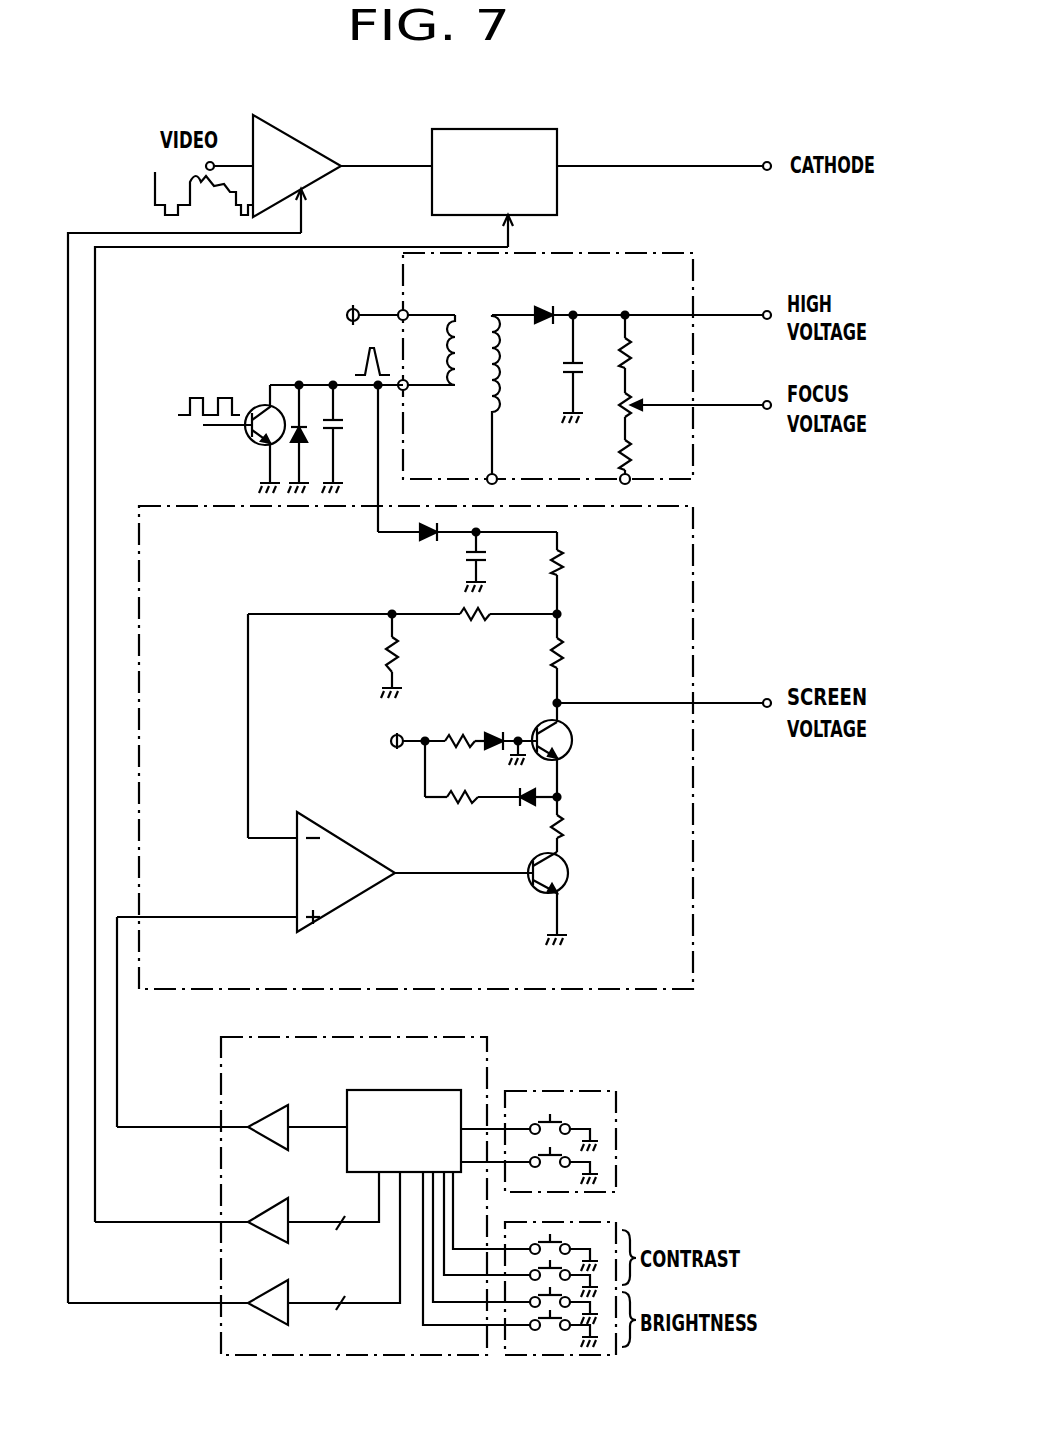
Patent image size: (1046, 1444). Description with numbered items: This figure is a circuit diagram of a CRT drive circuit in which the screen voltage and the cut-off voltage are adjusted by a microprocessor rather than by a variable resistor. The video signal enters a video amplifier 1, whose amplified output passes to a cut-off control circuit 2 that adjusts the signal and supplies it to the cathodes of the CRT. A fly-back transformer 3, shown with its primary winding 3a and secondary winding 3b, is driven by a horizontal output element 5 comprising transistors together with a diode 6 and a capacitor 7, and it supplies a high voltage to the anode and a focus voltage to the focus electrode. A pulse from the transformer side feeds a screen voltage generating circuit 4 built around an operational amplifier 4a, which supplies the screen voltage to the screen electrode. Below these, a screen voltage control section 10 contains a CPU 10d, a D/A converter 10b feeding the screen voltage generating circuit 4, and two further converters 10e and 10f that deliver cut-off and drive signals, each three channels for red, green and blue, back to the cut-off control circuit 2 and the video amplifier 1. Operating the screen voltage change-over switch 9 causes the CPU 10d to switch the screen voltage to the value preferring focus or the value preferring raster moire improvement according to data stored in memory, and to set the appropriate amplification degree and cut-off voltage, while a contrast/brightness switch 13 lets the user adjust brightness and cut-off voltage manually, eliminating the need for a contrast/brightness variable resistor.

The video amplifier 1 is at (300, 142).
The cut-off control circuit 2 is at (515, 130).
The fly-back transformer 3 is at (548, 337).
The primary winding of transformer 3a is at (462, 312).
The secondary winding of transformer 3b is at (482, 312).
The screen voltage generating circuit 4 is at (441, 747).
The operational amplifier 4a is at (340, 835).
The horizontal output element 5 is at (254, 443).
The diode 6 is at (302, 440).
The capacitor 7 is at (348, 430).
The screen voltage change-over switch 9 is at (598, 1091).
The screen voltage control section 10 is at (310, 1184).
The D/A converter 10b is at (292, 1104).
The CPU 10d is at (398, 1090).
The cutoff D/A converter 10e is at (270, 1200).
The drive D/A converter 10f is at (260, 1308).
The contrast/brightness switch 13 is at (605, 1222).